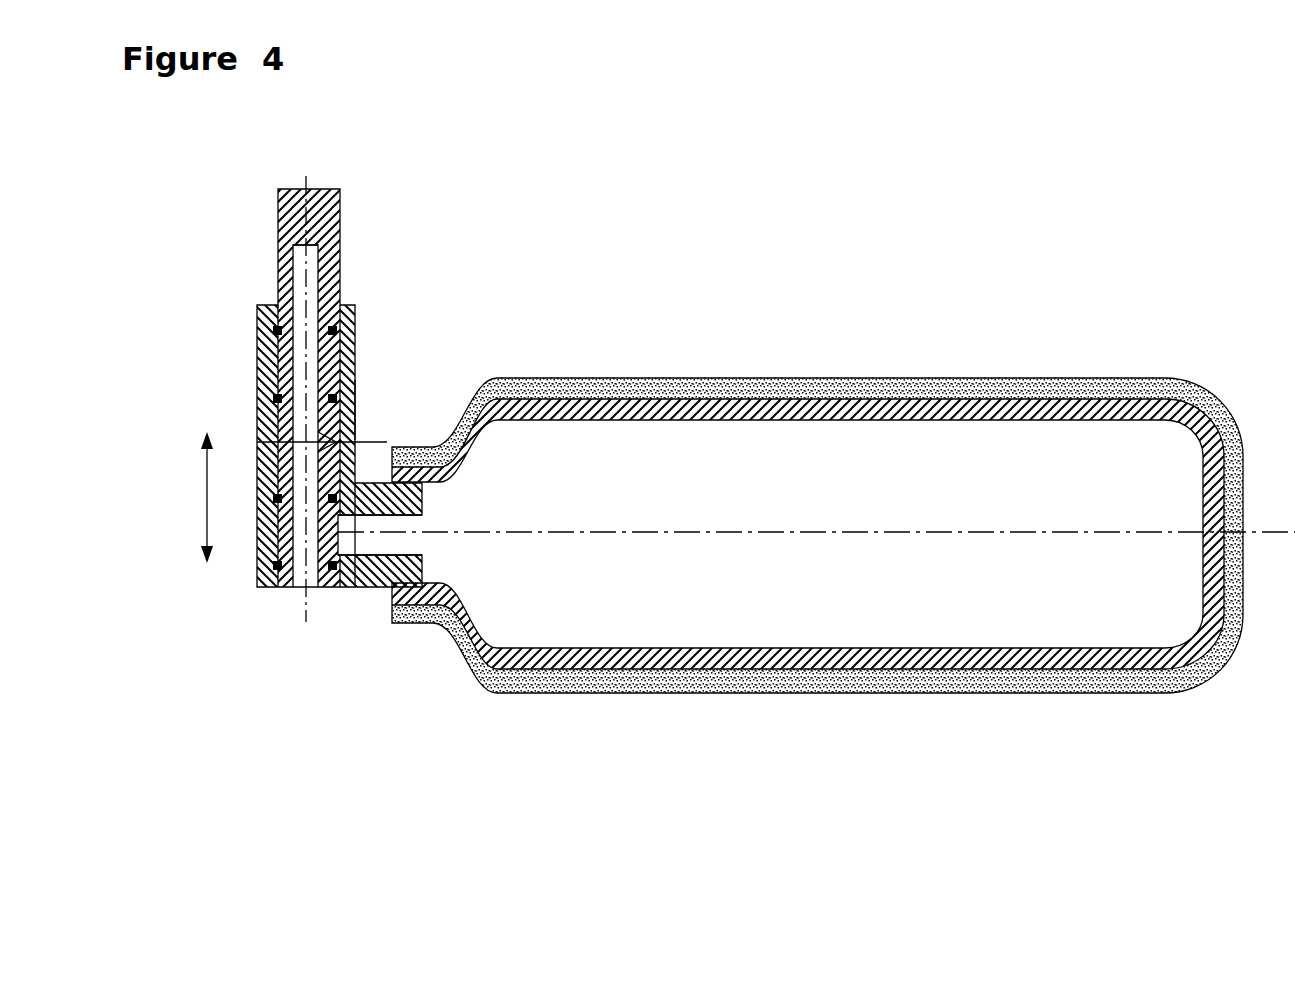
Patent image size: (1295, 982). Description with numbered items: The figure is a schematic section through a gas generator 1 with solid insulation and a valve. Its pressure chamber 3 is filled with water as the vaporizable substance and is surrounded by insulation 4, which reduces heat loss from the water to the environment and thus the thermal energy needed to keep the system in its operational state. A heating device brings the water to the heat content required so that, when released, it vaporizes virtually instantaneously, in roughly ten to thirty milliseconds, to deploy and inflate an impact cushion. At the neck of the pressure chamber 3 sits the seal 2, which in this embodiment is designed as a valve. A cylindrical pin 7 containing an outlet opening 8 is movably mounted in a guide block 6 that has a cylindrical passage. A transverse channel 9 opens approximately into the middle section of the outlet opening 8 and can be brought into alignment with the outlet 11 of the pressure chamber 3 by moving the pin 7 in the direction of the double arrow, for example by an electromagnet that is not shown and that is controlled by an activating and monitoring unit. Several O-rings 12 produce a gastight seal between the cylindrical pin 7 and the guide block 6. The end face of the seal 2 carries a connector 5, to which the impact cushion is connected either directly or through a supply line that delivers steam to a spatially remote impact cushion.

The gas generator 1 is at (822, 738).
The seal 2 is at (238, 628).
The pressure chamber 3 is at (816, 505).
The insulation 4 is at (920, 398).
The connector 5 is at (353, 590).
The guide block 6 is at (355, 305).
The cylindrical pin 7 is at (340, 225).
The outlet opening 8 is at (280, 242).
The transverse channel 9 is at (355, 408).
The outlet 11 is at (423, 540).
The O-rings 12 is at (257, 368).